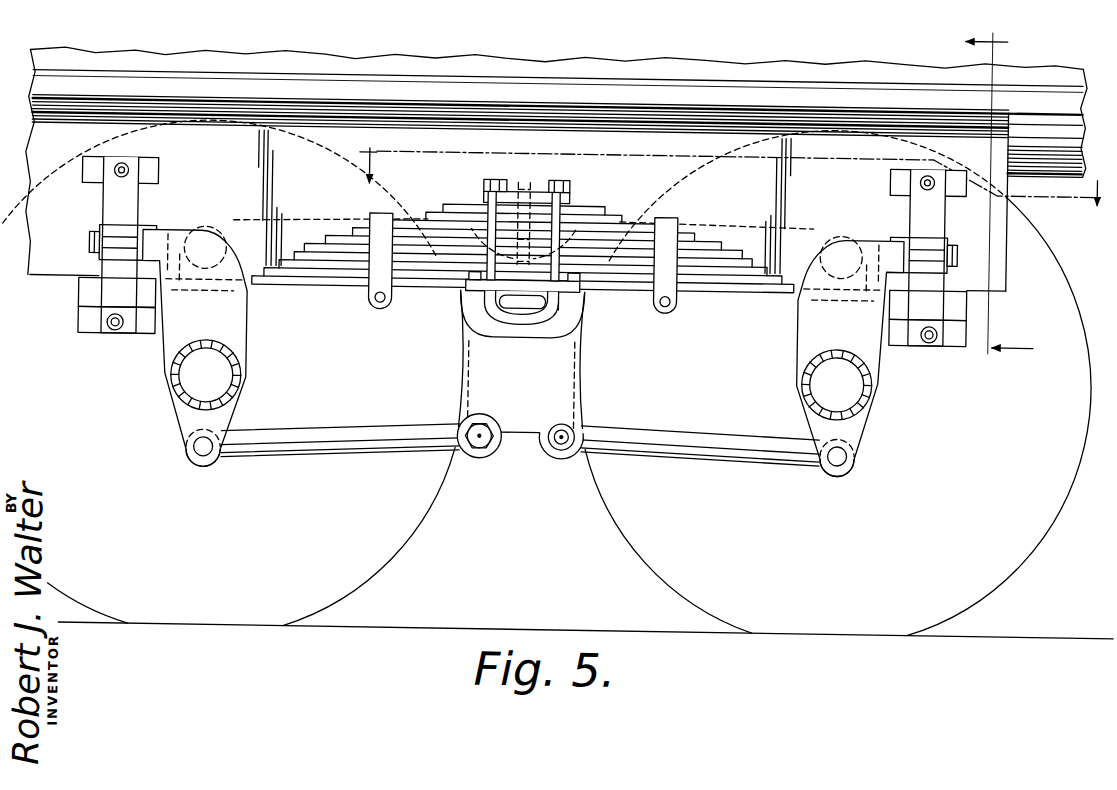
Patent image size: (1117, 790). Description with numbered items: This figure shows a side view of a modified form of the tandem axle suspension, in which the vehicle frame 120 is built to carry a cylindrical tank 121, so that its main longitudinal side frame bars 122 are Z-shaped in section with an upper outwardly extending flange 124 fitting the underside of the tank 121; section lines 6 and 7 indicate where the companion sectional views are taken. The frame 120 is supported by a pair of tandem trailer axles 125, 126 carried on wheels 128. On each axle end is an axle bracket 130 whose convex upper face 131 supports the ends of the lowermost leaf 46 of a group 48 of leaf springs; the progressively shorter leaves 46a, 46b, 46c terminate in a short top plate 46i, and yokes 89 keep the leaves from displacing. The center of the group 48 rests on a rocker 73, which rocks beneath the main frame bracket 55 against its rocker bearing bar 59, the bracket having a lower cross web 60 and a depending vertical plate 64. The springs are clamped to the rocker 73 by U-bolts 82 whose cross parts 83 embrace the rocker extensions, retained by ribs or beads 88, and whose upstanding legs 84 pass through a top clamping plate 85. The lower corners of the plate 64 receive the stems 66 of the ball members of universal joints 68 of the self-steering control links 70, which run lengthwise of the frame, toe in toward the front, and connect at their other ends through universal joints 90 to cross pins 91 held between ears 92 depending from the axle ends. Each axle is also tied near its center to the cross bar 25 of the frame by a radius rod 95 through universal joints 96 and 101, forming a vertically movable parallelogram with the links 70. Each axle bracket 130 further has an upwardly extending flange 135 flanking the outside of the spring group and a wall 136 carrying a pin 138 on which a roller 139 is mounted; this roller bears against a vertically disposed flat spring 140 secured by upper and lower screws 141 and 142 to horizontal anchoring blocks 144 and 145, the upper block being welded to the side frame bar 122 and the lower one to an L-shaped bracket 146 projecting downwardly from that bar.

The section line 6- 6 is at (732, 166).
The section line 7- 7 is at (1007, 194).
The cross bar 25 is at (472, 178).
The lowermost leaf 46 is at (290, 301).
The leaf 46a is at (328, 296).
The leaf 46b is at (351, 293).
The leaf 46c is at (418, 290).
The top plate 46i is at (595, 204).
The group of leaf springs 48 is at (697, 231).
The frame bracket 55 is at (475, 340).
The rocker bearing bar 59 is at (469, 308).
The lower cross web 60 is at (513, 334).
The vertical plate 64 is at (488, 426).
The stems 66 is at (554, 427).
The universal joint 68 is at (472, 455).
The self-steering control links 70 is at (377, 460).
The rocker 73 is at (557, 318).
The U-bolts 82 is at (488, 179).
The cross part 83 is at (535, 322).
The upstanding legs 84 is at (567, 198).
The top clamping plate 85 is at (532, 185).
The ribs or beads 88 is at (559, 182).
The yokes 89 is at (369, 218).
The universal joint 90 is at (188, 470).
The cross pin 91 is at (196, 453).
The ears 92 is at (213, 466).
The radius rod 95 is at (314, 226).
The universal joint 96 is at (475, 197).
The universal joint 101 is at (212, 228).
The vehicle frame 120 is at (1007, 224).
The cylindrical tank 121 is at (1063, 64).
The main longitudinal side frame bars 122 is at (1003, 261).
The upper outwardly extending flange 124 is at (612, 106).
The axle 125 is at (249, 394).
The axle 126 is at (865, 405).
The wheels 128 is at (410, 525).
The axle bracket 130 is at (250, 355).
The upper face 131 is at (235, 303).
The upwardly extending flange 135 is at (211, 256).
The wall 136 is at (161, 296).
The pin 138 is at (88, 248).
The roller 139 is at (103, 264).
The flat spring 140 is at (523, 252).
The upper screw 141 is at (118, 170).
The lower screw 142 is at (116, 340).
The upper anchoring block 144 is at (154, 174).
The lower anchoring block 145 is at (79, 328).
The L-shaped bracket 146 is at (80, 305).